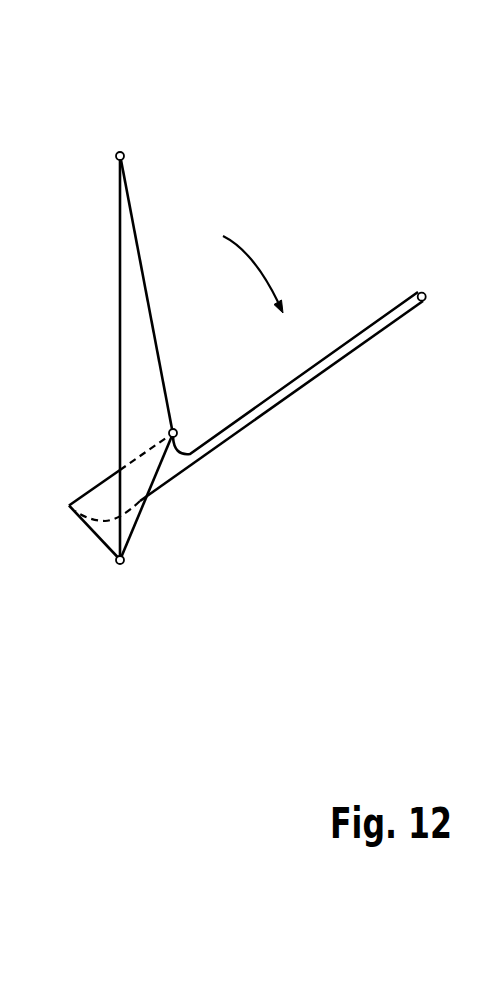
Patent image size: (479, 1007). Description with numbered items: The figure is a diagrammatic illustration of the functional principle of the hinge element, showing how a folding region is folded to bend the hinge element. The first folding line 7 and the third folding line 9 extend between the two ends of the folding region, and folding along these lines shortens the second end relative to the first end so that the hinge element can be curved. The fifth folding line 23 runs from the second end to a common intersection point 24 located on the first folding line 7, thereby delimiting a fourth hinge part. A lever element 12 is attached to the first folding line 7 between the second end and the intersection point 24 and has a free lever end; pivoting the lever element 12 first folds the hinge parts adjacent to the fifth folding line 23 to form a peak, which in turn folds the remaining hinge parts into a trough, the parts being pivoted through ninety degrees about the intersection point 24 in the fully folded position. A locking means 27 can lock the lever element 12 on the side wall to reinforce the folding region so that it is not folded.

The first folding line 7 is at (148, 293).
The third folding line 9 is at (120, 340).
The lever element 12 is at (336, 366).
The fifth folding line 23 is at (135, 525).
The intersection point 24 is at (178, 429).
The locking means 27 is at (171, 158).